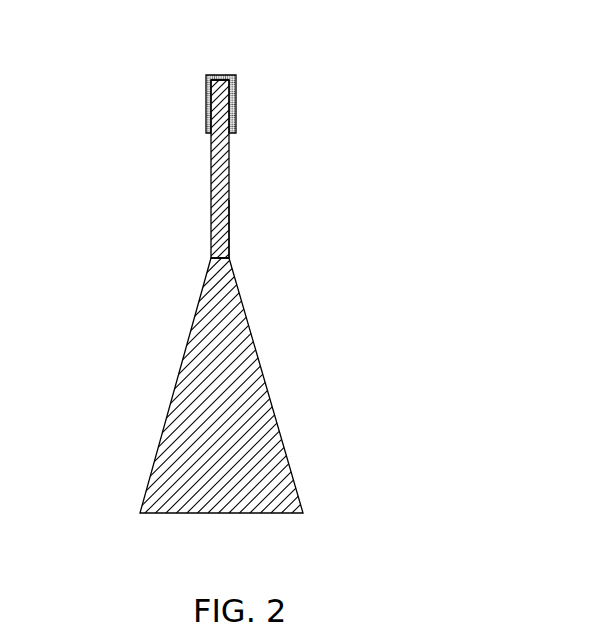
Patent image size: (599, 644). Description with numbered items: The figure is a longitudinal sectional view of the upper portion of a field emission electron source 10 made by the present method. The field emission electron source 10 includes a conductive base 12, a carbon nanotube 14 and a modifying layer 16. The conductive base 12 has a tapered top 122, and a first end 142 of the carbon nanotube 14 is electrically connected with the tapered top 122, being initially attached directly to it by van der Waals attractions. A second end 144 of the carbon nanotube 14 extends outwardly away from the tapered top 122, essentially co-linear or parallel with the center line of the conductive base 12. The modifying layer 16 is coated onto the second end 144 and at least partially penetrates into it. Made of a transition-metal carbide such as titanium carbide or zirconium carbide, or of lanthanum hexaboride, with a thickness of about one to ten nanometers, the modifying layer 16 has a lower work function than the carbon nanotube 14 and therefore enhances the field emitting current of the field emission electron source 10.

The field emission electron source 10 is at (445, 110).
The conductive base 12 is at (172, 397).
The tapered top 122 is at (222, 285).
The carbon nanotube 14 is at (230, 173).
The first end 142 is at (230, 236).
The second end 144 is at (221, 97).
The modifying layer 16 is at (207, 77).